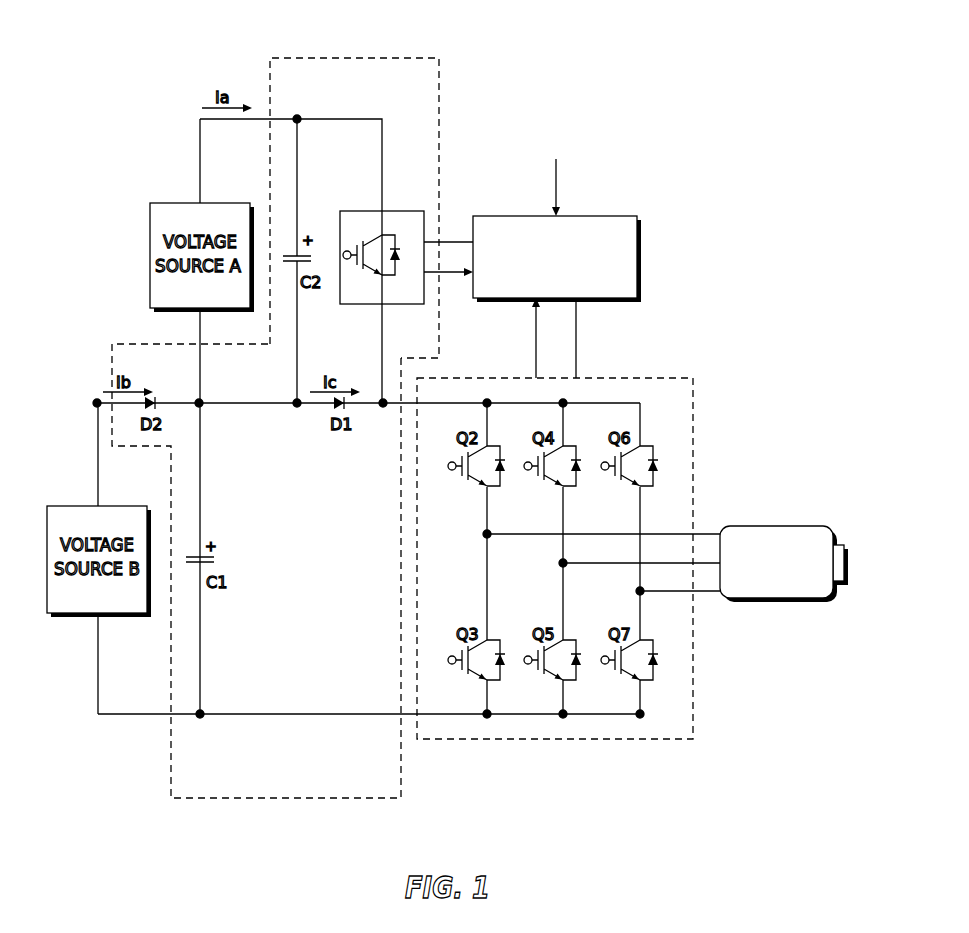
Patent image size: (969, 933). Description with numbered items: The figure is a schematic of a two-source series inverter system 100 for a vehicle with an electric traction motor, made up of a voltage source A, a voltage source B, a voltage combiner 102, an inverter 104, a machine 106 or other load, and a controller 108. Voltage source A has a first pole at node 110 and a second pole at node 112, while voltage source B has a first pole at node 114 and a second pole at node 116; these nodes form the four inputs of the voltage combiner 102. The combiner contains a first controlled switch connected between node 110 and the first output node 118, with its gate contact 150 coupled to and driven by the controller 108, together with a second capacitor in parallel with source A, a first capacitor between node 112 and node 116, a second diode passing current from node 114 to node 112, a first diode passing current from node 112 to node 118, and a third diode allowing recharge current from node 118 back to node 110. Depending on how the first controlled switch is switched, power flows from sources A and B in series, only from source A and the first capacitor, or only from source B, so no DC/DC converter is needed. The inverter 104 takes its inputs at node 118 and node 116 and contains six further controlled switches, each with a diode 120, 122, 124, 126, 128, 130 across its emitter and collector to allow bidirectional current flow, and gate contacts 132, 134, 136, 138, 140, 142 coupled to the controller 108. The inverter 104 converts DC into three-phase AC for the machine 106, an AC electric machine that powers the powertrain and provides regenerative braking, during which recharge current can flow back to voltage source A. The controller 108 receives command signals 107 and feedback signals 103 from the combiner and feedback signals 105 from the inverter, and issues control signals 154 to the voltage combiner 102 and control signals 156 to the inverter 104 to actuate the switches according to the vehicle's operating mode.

The two-source series inverter system 100 is at (646, 32).
The voltage combiner 102 is at (357, 800).
The feedback signals 103 is at (449, 272).
The inverter 104 is at (635, 741).
The feedback signals 105 is at (535, 375).
The machine 106 is at (768, 527).
The command signals 107 is at (556, 172).
The controller 108 is at (622, 216).
The node 110 is at (297, 117).
The node 112 is at (198, 401).
The node 114 is at (97, 401).
The node 116 is at (201, 718).
The first output node 118 is at (381, 401).
The diode 120 is at (503, 470).
The diode 122 is at (580, 470).
The diode 124 is at (657, 470).
The diode 126 is at (503, 664).
The diode 128 is at (580, 664).
The diode 130 is at (657, 664).
The gate contact 132 is at (452, 472).
The gate contact 134 is at (528, 466).
The gate contact 136 is at (605, 466).
The gate contact 138 is at (452, 666).
The gate contact 140 is at (528, 660).
The gate contact 142 is at (605, 660).
The gate contact 150 is at (349, 262).
The control signals 154 is at (449, 242).
The control signals 156 is at (577, 312).